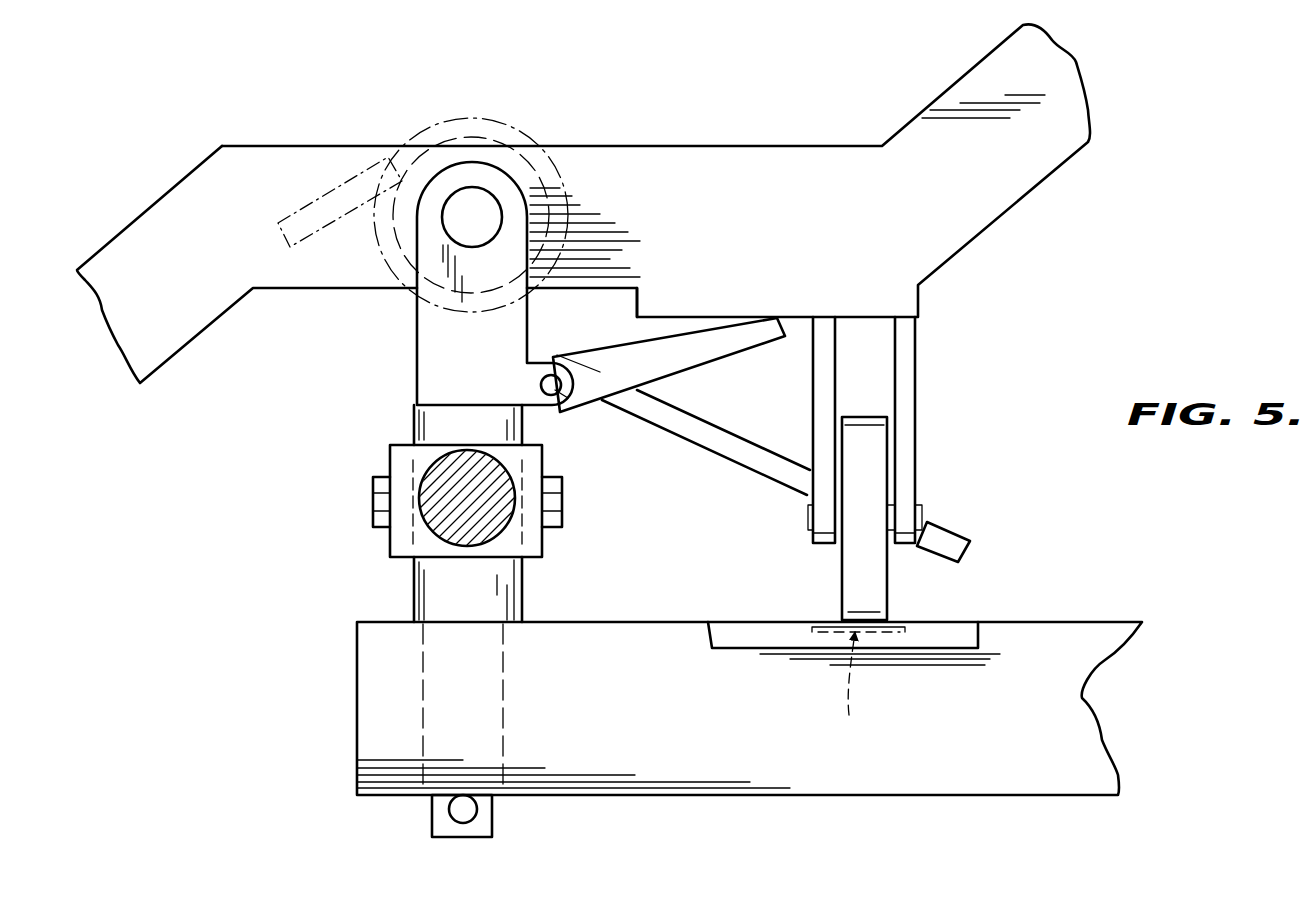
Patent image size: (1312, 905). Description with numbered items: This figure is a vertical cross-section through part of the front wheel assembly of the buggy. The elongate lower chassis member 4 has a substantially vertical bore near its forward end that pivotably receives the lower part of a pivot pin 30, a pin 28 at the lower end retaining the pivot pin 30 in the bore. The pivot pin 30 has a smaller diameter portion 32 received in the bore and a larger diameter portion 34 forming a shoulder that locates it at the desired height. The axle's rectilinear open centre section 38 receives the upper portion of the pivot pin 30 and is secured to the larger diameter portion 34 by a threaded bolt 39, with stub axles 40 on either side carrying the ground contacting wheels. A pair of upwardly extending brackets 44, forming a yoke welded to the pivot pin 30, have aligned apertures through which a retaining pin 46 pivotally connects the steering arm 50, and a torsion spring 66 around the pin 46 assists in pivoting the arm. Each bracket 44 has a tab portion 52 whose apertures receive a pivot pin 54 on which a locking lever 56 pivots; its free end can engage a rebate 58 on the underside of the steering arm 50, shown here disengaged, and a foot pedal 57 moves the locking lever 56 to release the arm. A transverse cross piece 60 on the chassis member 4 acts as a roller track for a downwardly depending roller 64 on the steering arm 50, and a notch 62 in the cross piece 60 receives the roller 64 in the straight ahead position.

The lower chassis member 4 is at (1053, 735).
The pin 28 is at (460, 812).
The pivot pin 30 is at (412, 424).
The smaller diameter portion 32 is at (507, 716).
The larger diameter portion 34 is at (437, 602).
The open centre section 38 is at (530, 540).
The threaded bolt 39 is at (562, 500).
The stub axle 40 is at (452, 492).
The bracket 44 is at (435, 365).
The retaining pin 46 is at (462, 207).
The steering arm 50 is at (826, 146).
The tab portion 52 is at (535, 372).
The pivot pin 54 is at (562, 402).
The locking lever 56 is at (717, 340).
The foot pedal 57 is at (948, 540).
The rebate 58 is at (625, 297).
The cross piece 60 is at (962, 632).
The notch 62 is at (866, 684).
The roller 64 is at (865, 568).
The torsion spring 66 is at (522, 127).